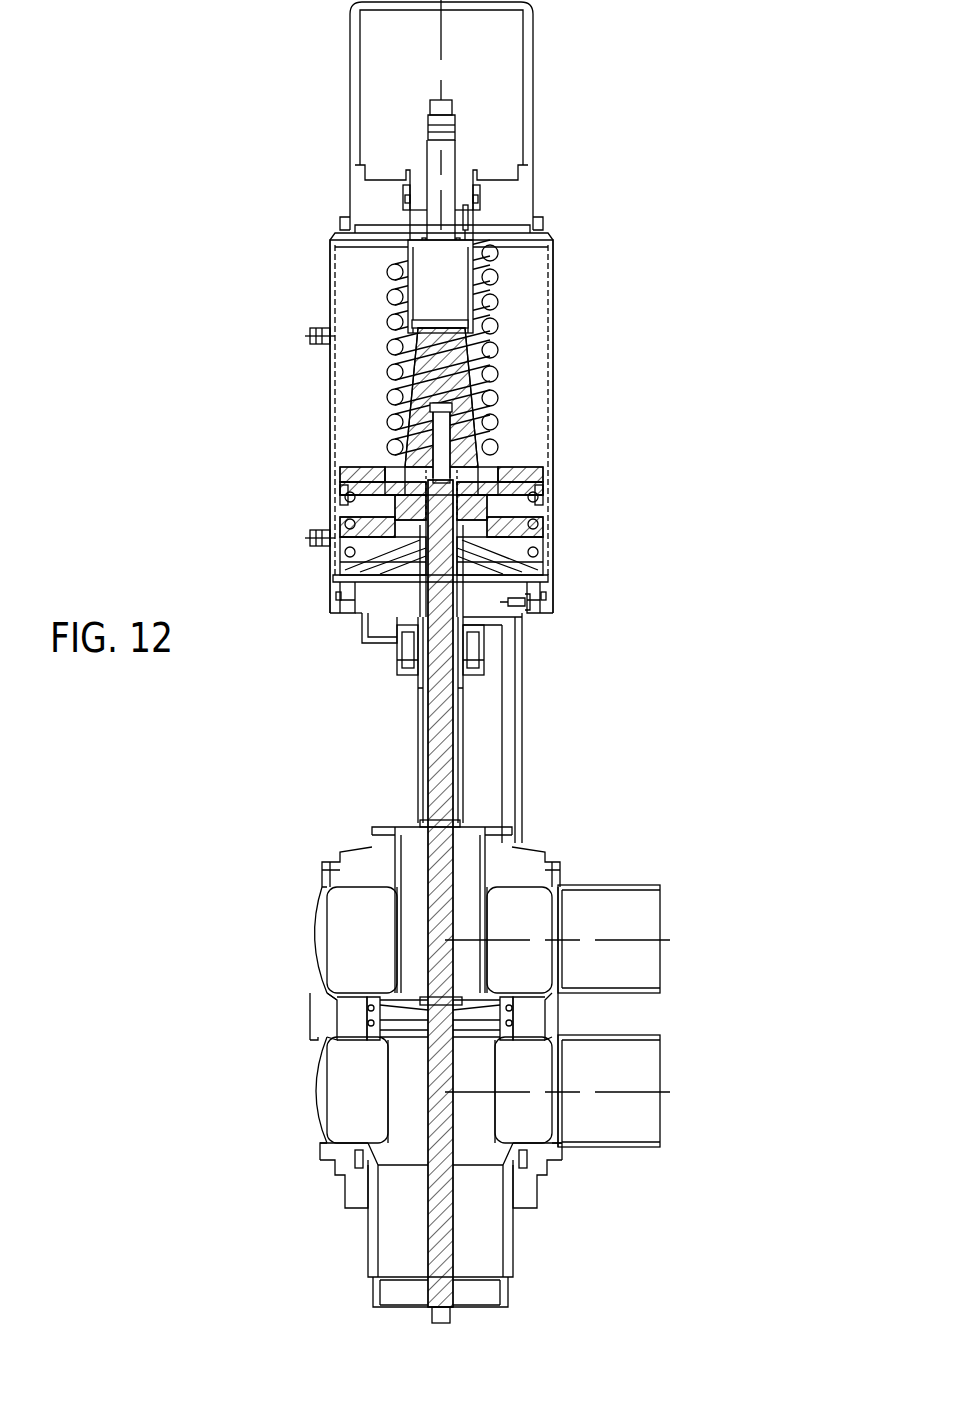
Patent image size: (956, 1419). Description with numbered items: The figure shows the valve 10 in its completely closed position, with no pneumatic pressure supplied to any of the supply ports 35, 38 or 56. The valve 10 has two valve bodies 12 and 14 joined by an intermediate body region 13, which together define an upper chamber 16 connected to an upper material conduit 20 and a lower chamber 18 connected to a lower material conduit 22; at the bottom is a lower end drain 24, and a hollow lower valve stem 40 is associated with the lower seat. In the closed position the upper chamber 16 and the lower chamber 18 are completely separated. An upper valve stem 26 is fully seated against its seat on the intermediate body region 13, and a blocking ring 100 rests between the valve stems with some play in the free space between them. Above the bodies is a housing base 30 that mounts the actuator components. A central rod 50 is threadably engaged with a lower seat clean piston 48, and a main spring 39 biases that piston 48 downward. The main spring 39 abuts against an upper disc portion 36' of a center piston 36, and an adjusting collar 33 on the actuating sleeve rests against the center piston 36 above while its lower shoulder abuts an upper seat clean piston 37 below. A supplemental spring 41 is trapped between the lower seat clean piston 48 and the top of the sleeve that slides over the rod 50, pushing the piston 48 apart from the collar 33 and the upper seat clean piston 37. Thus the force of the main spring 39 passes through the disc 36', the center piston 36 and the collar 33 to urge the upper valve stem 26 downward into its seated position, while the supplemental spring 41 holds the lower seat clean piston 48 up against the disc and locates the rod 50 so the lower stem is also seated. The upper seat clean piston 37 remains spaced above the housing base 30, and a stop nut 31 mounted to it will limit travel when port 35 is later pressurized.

The valve 10 is at (612, 297).
The valve body 12 is at (298, 935).
The intermediate body region 13 is at (298, 1008).
The valve body 14 is at (298, 1082).
The upper chamber 16 is at (370, 945).
The lower chamber 18 is at (370, 1098).
The upper material conduit 20 is at (623, 930).
The lower material conduit 22 is at (623, 1077).
The lower end drain 24 is at (487, 1225).
The upper valve stem 26 is at (468, 845).
The housing base 30 is at (500, 620).
The stop nut 31 is at (400, 665).
The adjusting collar 33 is at (395, 512).
The supply port 35 is at (347, 617).
The center piston 36 is at (477, 524).
The upper disc portion 36' is at (479, 457).
The upper seat clean piston 37 is at (500, 560).
The supply port 38 is at (312, 538).
The main spring 39 is at (497, 372).
The hollow lower valve stem 40 is at (513, 1242).
The supplemental spring 41 is at (370, 478).
The lower seat clean piston 48 is at (515, 475).
The rod 50 is at (447, 727).
The supply port 56 is at (312, 333).
The blocking ring 100 is at (490, 1018).